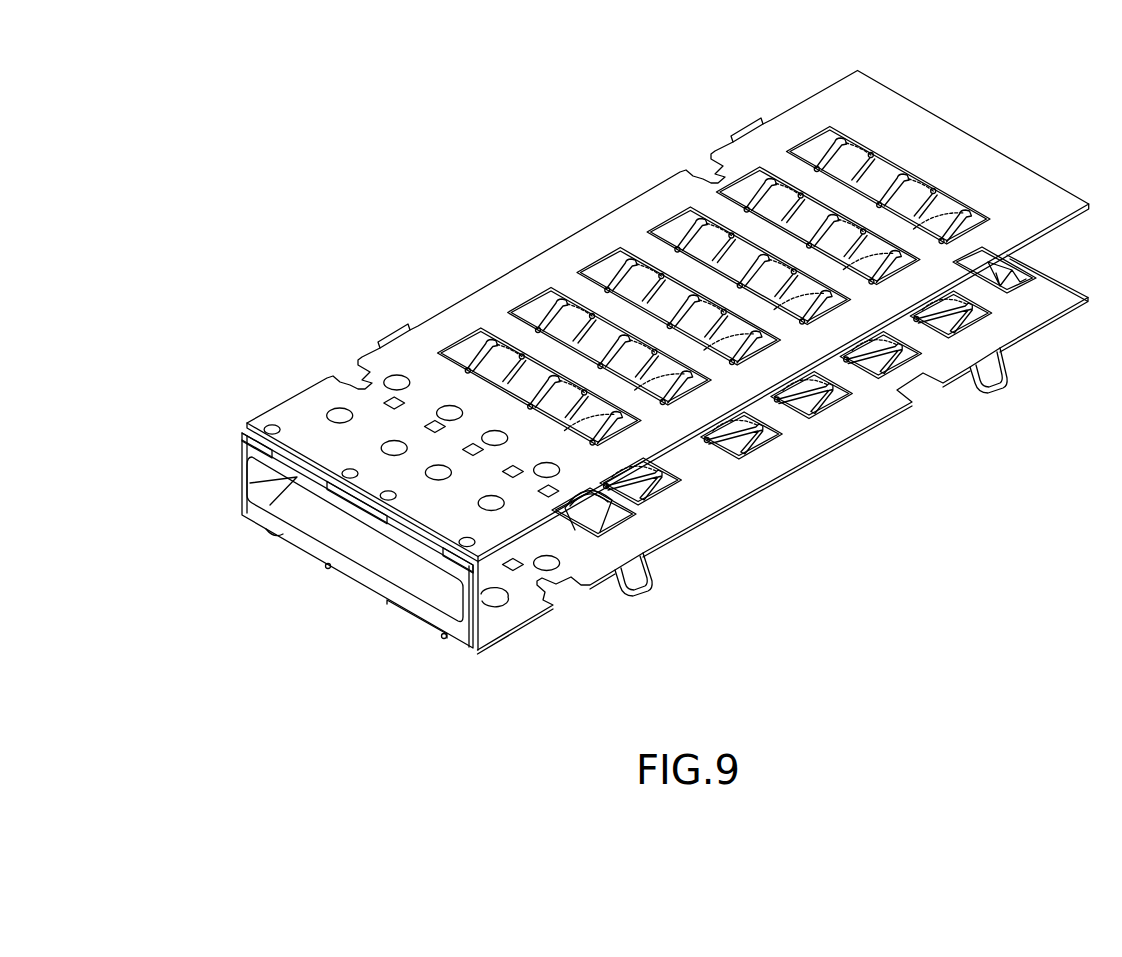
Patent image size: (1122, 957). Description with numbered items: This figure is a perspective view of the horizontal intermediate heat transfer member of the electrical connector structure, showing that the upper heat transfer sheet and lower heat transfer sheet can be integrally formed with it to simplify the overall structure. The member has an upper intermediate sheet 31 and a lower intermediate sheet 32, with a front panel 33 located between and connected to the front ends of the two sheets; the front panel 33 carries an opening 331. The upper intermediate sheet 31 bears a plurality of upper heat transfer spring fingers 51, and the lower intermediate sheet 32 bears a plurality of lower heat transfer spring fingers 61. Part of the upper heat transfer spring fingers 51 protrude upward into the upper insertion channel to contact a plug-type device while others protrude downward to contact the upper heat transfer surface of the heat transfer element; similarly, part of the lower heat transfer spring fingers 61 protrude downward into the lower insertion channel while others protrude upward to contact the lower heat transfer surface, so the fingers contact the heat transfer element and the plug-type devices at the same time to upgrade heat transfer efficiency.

The upper intermediate sheet 31 is at (414, 262).
The lower intermediate sheet 32 is at (884, 460).
The front panel 33 is at (298, 539).
The window opening of front plate 331 is at (307, 537).
The upper heat transfer spring finger 51 is at (565, 330).
The lower heat transfer spring finger 61 is at (763, 410).